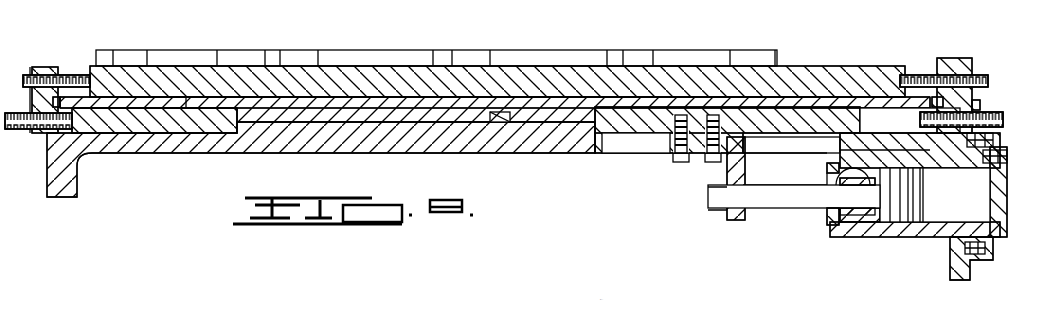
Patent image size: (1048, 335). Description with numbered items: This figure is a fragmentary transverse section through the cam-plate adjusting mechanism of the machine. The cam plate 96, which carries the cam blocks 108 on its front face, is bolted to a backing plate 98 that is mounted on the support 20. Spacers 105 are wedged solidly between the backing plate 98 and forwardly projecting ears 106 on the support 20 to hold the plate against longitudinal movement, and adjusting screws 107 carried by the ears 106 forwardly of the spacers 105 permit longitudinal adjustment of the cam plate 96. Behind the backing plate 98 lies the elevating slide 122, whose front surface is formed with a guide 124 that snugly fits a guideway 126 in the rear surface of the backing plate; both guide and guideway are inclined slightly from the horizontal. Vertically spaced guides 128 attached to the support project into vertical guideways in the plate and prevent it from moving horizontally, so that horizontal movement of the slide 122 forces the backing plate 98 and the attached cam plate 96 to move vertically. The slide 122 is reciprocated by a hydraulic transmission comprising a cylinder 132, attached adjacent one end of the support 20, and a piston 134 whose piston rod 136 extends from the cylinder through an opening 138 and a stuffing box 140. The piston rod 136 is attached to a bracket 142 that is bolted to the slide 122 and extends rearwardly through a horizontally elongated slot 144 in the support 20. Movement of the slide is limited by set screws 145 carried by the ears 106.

The support 20 is at (233, 153).
The cam plate 96 is at (350, 67).
The backing plate 98 is at (285, 97).
The spacers 105 is at (40, 100).
The ears 106 is at (52, 102).
The adjusting screws 107 is at (63, 78).
The cam blocks 108 is at (551, 32).
The elevating slide 122 is at (653, 110).
The guide 124 is at (216, 112).
The guideway 126 is at (181, 100).
The guides 128 is at (490, 112).
The cylinder 132 is at (877, 213).
The piston 134 is at (913, 225).
The piston rod 136 is at (812, 206).
The opening 138 is at (838, 167).
The stuffing box 140 is at (830, 215).
The bracket 142 is at (728, 170).
The slot 144 is at (637, 143).
The set screws 145 is at (20, 130).